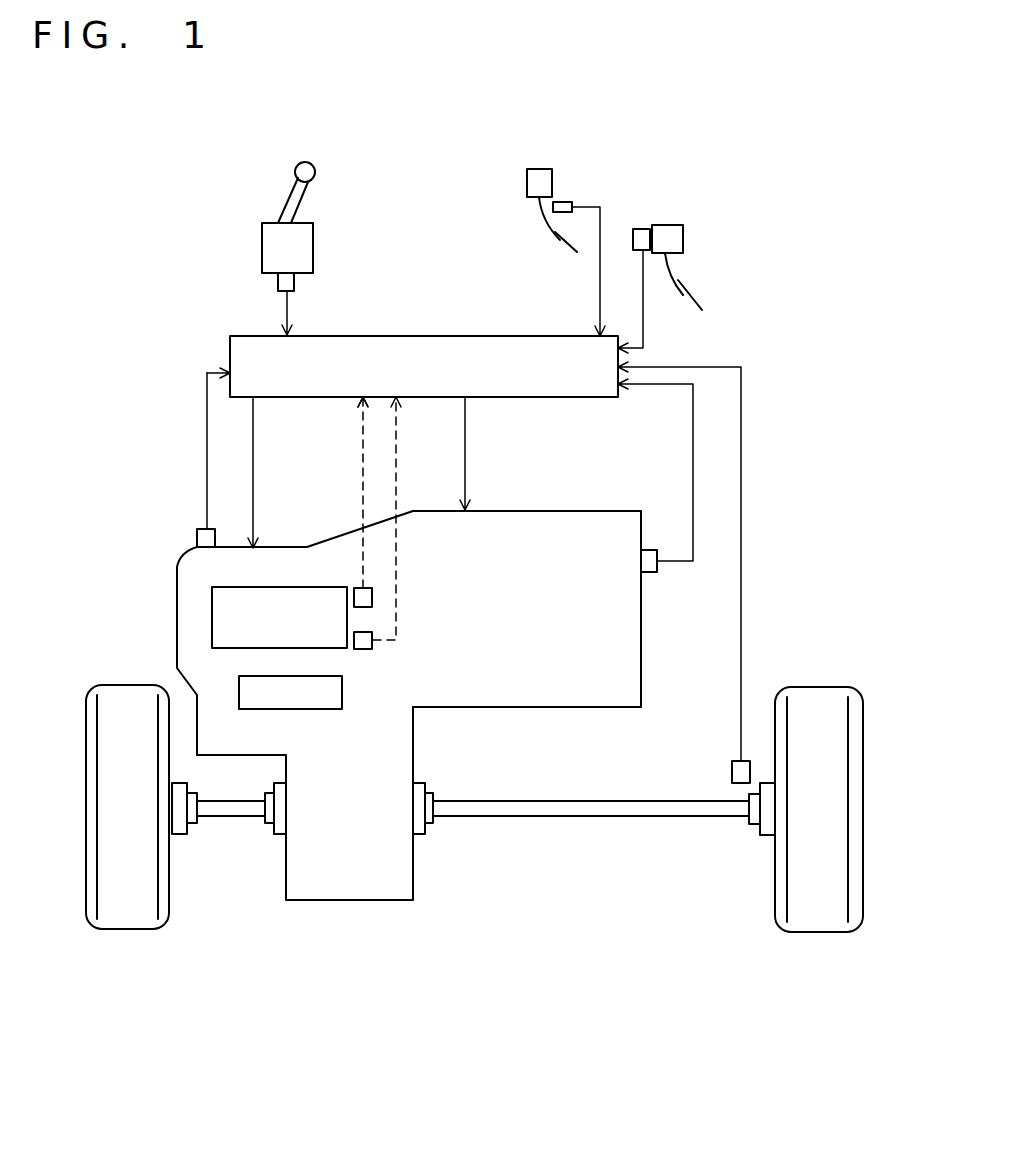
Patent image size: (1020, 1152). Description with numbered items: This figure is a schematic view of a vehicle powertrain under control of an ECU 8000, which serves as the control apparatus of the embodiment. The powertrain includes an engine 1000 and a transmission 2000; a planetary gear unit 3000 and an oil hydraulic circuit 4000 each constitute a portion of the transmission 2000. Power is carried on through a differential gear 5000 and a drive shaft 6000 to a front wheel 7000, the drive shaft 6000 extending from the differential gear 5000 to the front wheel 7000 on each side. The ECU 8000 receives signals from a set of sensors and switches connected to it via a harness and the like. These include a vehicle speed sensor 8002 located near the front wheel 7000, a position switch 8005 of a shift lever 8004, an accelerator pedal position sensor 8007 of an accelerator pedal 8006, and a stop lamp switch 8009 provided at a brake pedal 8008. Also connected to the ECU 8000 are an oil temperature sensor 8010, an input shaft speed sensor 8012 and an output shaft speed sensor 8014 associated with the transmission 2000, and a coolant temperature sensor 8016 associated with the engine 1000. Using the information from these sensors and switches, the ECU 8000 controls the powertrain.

The engine 1000 is at (543, 511).
The transmission 2000 is at (280, 547).
The planetary gear unit 3000 is at (318, 587).
The oil hydraulic circuit 4000 is at (323, 710).
The differential gear 5000 is at (348, 900).
The drive shaft 6000 is at (227, 820).
The front wheel 7000 is at (124, 685).
The ECU 8000 is at (505, 336).
The vehicle speed sensor 8002 is at (732, 770).
The shift lever 8004 is at (308, 196).
The position switch 8005 is at (278, 283).
The accelerator pedal 8006 is at (675, 268).
The accelerator pedal position sensor 8007 is at (645, 229).
The brake pedal 8008 is at (547, 222).
The stop lamp switch 8009 is at (563, 202).
The oil temperature sensor 8010 is at (198, 538).
The input shaft speed sensor 8012 is at (373, 598).
The output shaft speed sensor 8014 is at (365, 650).
The coolant temperature sensor 8016 is at (648, 572).